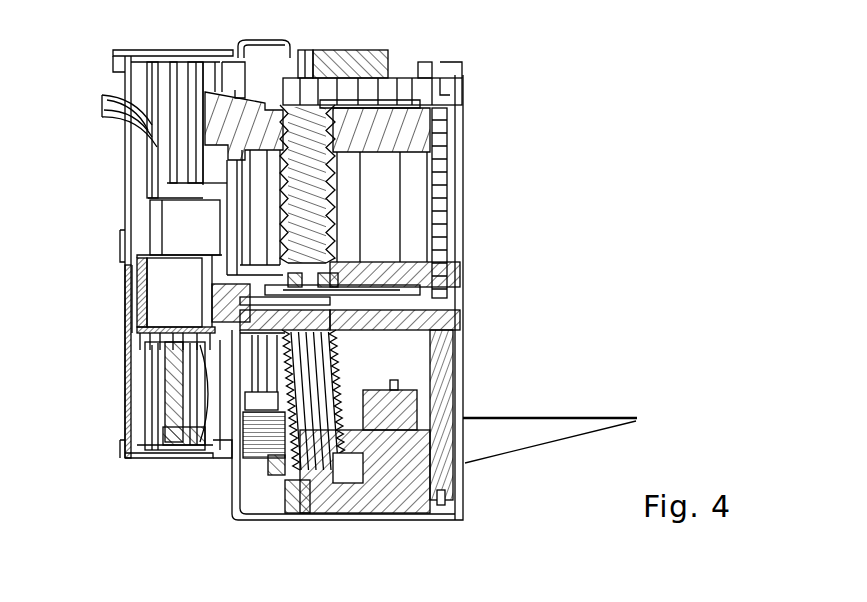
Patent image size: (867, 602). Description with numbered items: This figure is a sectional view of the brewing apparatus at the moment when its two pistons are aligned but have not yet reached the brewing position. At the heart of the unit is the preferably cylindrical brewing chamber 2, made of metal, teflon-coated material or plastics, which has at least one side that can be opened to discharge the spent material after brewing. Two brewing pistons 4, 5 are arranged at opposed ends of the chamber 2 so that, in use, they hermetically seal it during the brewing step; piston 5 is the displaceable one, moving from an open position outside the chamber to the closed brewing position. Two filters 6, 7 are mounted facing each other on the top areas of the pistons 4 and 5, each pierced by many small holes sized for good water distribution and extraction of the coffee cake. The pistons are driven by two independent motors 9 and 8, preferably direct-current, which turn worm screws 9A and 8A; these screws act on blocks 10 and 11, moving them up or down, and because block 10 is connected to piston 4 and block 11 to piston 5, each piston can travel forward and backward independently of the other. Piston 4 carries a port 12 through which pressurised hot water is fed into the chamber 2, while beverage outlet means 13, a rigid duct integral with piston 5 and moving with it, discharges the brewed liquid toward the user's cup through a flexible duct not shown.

The brewing chamber 2 is at (125, 305).
The brewing piston 4 is at (180, 375).
The brewing piston 5 is at (150, 150).
The filter 6 is at (185, 205).
The filter 7 is at (130, 340).
The motor 8 is at (360, 57).
The worm screw 8A is at (332, 181).
The motor 9 is at (360, 498).
The worm screw 9A is at (238, 490).
The block 10 is at (322, 513).
The block 11 is at (462, 82).
The port 12 is at (210, 457).
The beverage outlet means 13 is at (117, 98).